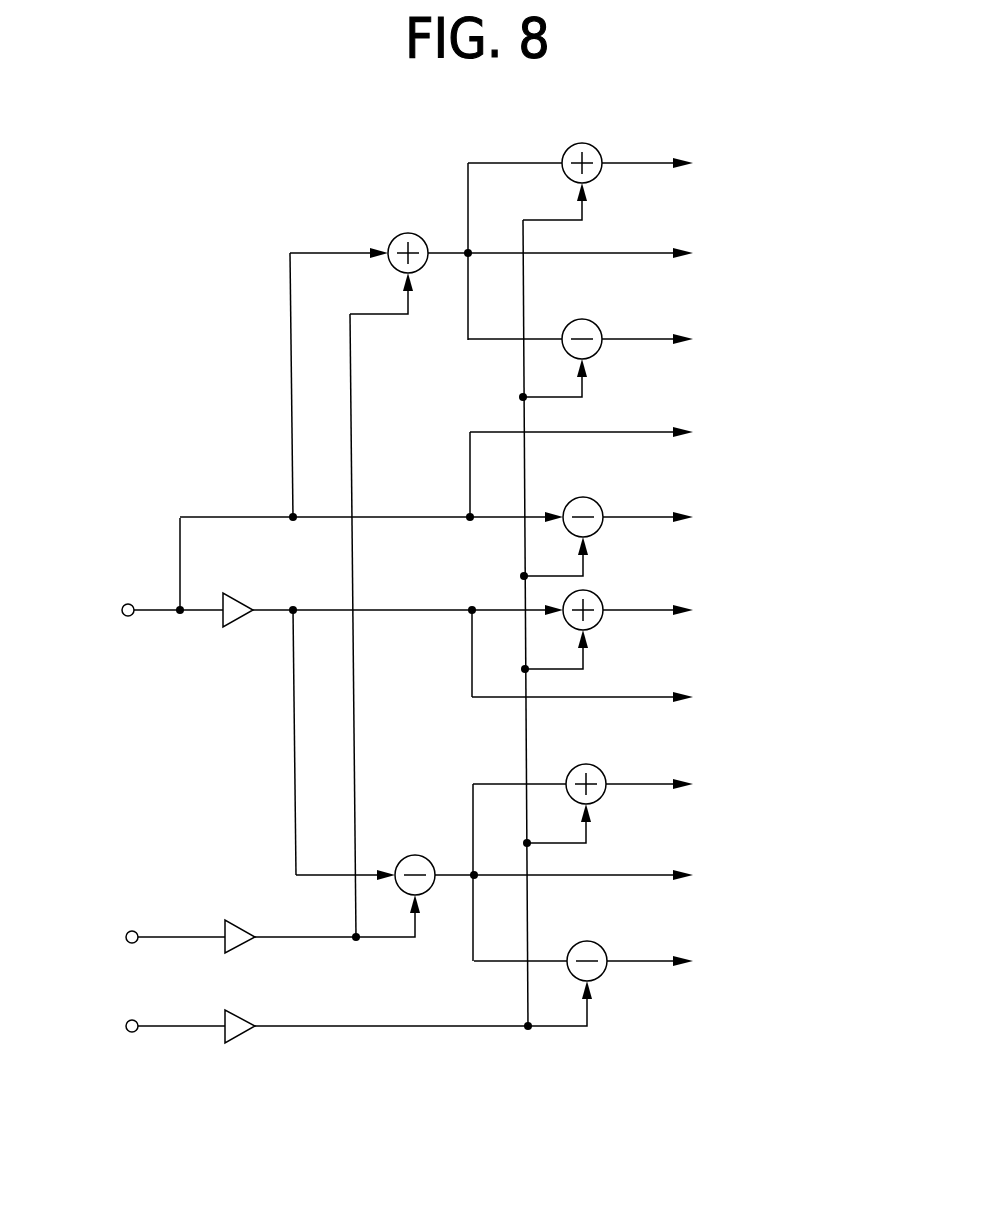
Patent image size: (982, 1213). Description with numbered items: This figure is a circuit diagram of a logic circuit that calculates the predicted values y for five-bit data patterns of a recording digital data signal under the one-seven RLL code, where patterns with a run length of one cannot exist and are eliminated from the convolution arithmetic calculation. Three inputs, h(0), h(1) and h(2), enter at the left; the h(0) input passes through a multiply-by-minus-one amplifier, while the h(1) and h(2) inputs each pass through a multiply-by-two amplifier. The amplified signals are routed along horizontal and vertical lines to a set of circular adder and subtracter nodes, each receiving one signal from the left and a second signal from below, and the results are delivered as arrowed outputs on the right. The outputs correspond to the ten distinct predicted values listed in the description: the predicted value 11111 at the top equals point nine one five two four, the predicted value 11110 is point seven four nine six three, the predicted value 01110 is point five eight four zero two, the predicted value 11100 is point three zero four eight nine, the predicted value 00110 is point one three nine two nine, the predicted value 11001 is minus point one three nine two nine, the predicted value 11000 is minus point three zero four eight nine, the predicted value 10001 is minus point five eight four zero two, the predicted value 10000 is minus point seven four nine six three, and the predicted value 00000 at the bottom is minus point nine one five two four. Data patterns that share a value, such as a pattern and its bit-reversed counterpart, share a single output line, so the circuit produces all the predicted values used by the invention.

The input h(0) with x-1 multiplier 0 is at (154, 627).
The input h(1) with x2 multiplier 1 is at (155, 952).
The input h(2) with x2 multiplier 2 is at (155, 1044).
The predicted value y 11111 is at (731, 162).
The predicted value y 11110 is at (664, 267).
The predicted value y 01110 is at (731, 337).
The predicted value y 11100 is at (665, 446).
The predicted value y 00110 is at (731, 531).
The predicted value y 11001 is at (731, 619).
The predicted value y 11000 is at (666, 709).
The predicted value y 10001 is at (733, 782).
The predicted value y 10000 is at (667, 885).
The predicted value y 00000 is at (733, 958).